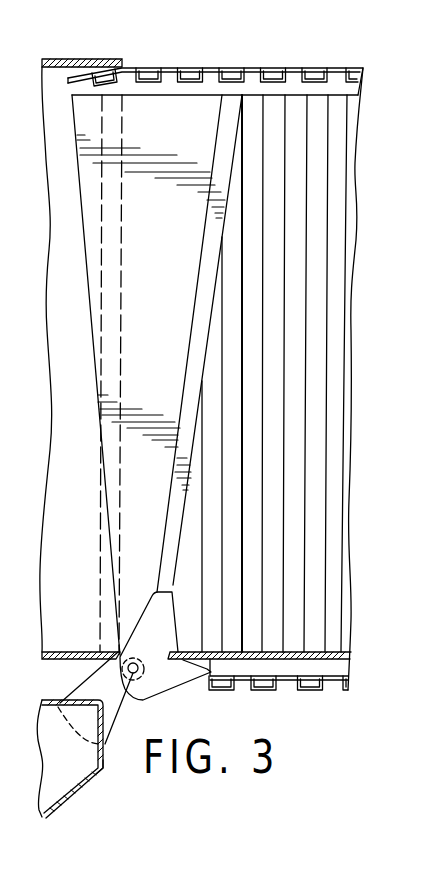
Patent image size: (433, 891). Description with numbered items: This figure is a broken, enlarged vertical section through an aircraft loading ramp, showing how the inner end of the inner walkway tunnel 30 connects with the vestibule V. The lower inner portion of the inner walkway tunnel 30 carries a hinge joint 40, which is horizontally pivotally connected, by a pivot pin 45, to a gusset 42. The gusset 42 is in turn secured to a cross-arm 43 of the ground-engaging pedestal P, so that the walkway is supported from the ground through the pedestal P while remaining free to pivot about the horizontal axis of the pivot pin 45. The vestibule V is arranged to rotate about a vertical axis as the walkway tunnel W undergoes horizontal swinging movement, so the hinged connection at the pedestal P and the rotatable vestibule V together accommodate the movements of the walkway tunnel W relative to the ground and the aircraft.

The vestibule V is at (74, 59).
The walkway tunnel W is at (335, 257).
The pedestal P is at (61, 807).
The inner walkway tunnel 30 is at (362, 166).
The hinge joint 40 is at (200, 677).
The gusset 42 is at (107, 708).
The cross-arm 43 is at (101, 773).
The pivot pin 45 is at (123, 706).